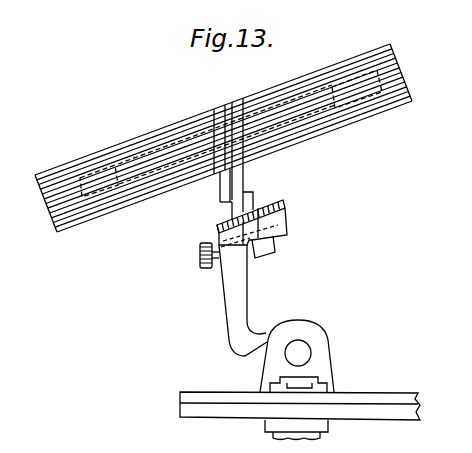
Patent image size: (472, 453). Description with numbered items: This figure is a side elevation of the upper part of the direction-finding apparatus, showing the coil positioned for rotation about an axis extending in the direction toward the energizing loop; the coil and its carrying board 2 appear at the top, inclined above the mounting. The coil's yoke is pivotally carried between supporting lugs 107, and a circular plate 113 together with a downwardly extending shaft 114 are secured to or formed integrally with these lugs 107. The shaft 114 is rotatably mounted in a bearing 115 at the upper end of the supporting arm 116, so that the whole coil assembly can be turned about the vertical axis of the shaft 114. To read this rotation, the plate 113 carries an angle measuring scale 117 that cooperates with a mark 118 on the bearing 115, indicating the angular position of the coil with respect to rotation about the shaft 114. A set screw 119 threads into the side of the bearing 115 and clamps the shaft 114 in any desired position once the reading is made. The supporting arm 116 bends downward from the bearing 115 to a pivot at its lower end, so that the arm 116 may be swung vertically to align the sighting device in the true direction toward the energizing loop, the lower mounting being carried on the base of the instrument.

The slotted board 2 is at (291, 88).
The lugs 107 is at (252, 192).
The circular plate 113 is at (225, 221).
The shaft 114 is at (290, 224).
The bearing 115 is at (282, 240).
The supporting arm 116 is at (235, 308).
The angle measuring scale 117 is at (280, 203).
The mark 118 is at (283, 208).
The set screw 119 is at (203, 256).